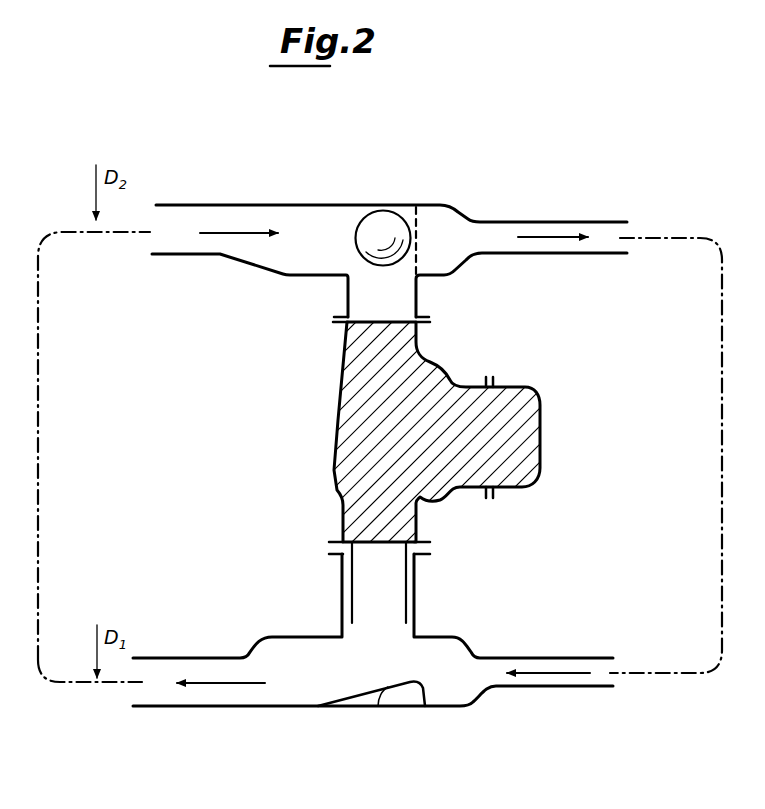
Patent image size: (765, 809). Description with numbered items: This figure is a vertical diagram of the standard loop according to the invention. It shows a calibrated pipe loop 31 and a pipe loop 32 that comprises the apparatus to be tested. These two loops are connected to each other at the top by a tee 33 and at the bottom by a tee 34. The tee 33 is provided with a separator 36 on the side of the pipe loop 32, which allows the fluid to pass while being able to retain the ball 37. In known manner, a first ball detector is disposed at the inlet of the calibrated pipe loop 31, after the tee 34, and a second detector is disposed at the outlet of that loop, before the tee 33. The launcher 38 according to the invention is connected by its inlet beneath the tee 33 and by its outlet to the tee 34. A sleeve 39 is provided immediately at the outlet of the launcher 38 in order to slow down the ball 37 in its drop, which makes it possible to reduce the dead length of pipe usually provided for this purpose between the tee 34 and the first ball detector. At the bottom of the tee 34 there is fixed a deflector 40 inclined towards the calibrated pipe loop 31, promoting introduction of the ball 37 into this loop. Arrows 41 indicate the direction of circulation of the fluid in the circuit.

The calibrated pipe loop 31 is at (39, 432).
The pipe loop 32 is at (722, 452).
The tee 33 is at (441, 199).
The tee 34 is at (319, 632).
The separator 36 is at (418, 237).
The ball 37 is at (371, 235).
The launcher 38 is at (355, 428).
The sleeve 39 is at (406, 592).
The deflector 40 is at (404, 690).
The arrows 41 is at (556, 676).